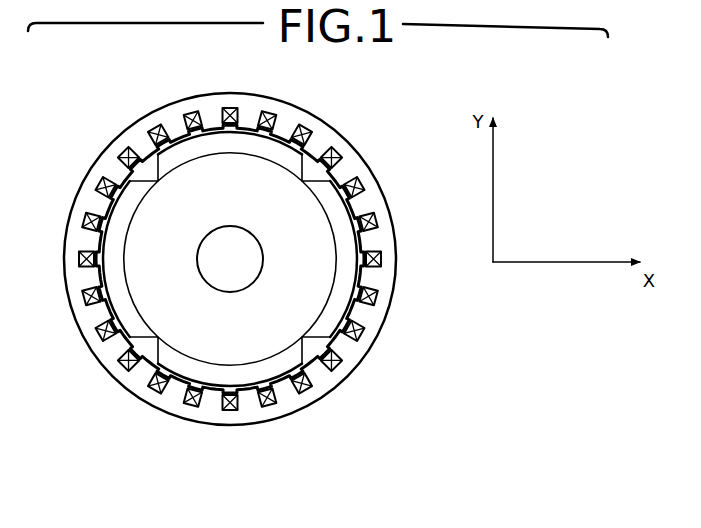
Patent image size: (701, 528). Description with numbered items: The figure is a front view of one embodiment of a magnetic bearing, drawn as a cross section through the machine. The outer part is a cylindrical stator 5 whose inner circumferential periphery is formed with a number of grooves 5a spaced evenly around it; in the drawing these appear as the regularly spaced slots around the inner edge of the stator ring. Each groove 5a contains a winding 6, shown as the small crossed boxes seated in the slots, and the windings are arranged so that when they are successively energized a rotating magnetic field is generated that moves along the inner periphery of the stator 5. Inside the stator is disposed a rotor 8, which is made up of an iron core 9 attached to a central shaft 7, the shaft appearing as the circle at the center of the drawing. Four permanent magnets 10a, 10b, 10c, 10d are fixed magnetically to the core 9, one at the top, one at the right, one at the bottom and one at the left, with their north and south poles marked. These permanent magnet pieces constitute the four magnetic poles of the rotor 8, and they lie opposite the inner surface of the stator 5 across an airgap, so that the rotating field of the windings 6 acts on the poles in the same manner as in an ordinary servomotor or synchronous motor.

The cylindrical stator 5 is at (322, 147).
The grooves 5a is at (349, 146).
The winding 6 is at (275, 117).
The shaft 7 is at (242, 247).
The rotor 8 is at (150, 172).
The iron core 9 is at (260, 259).
The permanent magnet 10a is at (176, 160).
The permanent magnet 10b is at (337, 222).
The permanent magnet 10c is at (262, 362).
The permanent magnet 10d is at (128, 306).